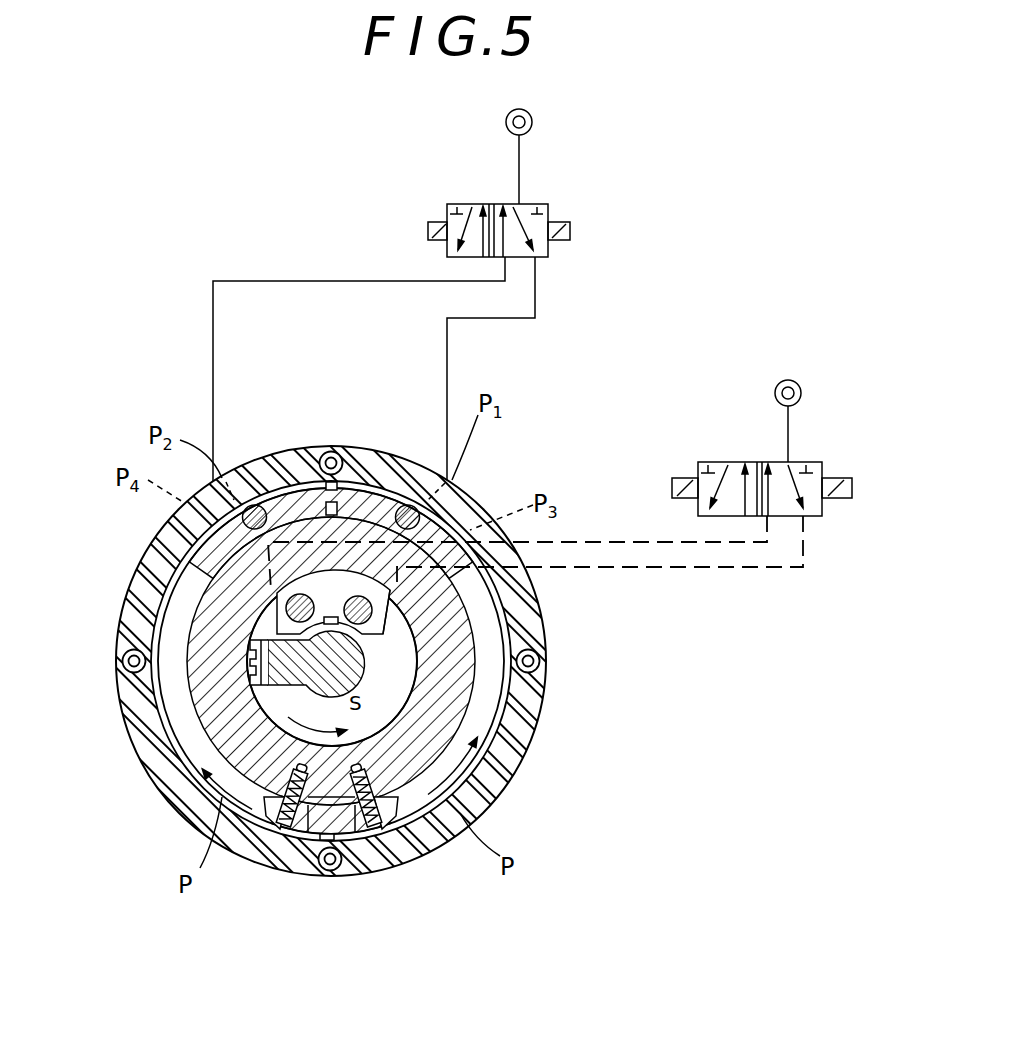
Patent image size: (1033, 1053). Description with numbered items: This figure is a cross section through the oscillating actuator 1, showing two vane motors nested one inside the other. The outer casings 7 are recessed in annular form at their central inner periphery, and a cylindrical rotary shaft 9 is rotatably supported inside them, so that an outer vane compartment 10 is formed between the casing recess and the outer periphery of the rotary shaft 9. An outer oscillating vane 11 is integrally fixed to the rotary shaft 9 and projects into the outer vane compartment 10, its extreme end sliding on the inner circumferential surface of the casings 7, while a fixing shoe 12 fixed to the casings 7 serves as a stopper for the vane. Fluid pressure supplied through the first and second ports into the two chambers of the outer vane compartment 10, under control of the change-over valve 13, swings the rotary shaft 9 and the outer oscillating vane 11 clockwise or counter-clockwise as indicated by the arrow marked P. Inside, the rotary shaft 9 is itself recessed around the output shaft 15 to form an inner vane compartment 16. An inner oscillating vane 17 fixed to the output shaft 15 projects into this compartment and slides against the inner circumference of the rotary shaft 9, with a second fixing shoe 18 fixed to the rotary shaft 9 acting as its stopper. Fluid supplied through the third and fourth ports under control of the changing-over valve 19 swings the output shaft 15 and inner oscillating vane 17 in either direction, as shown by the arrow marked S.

The oscillating actuator 1 is at (482, 495).
The casings 7 is at (163, 752).
The cylindrical rotary shaft 9 is at (447, 632).
The outer vane compartment 10 is at (192, 748).
The outer oscillating vane 11 is at (347, 848).
The fixing shoe 12 is at (375, 490).
The change-over valve 13 is at (548, 205).
The output shaft 15 is at (312, 682).
The inner vane compartment 16 is at (253, 638).
The inner oscillating vane 17 is at (274, 634).
The fixing shoe 18 is at (395, 695).
The changing-over valve 19 is at (816, 516).